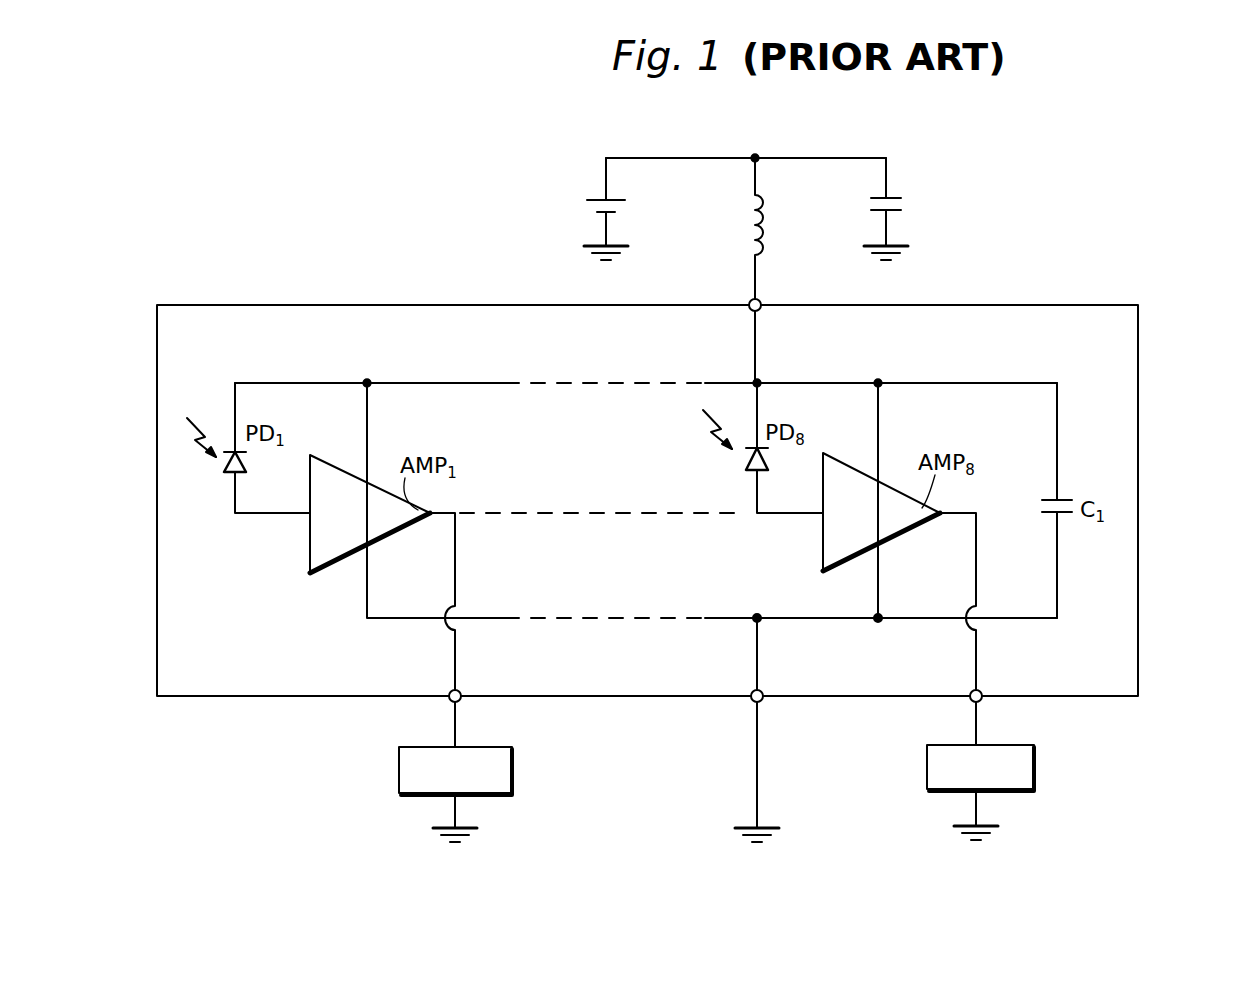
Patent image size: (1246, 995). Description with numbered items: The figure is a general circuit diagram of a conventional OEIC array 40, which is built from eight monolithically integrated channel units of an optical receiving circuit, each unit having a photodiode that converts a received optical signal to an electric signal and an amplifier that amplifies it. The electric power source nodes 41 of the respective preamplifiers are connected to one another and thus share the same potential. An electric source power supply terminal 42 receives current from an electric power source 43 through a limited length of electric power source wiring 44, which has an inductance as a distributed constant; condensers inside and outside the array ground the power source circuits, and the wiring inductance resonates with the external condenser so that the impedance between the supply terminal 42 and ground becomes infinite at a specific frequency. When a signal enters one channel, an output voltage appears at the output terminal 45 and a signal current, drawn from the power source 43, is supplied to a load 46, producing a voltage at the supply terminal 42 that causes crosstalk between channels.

The OEIC array 40 is at (1139, 385).
The electric power source nodes 41 is at (367, 383).
The electric source power supply terminal 42 is at (749, 300).
The electric power source 43 is at (600, 198).
The electric power source wiring 44 is at (808, 158).
The output terminal 45 is at (450, 702).
The load 46 is at (514, 779).